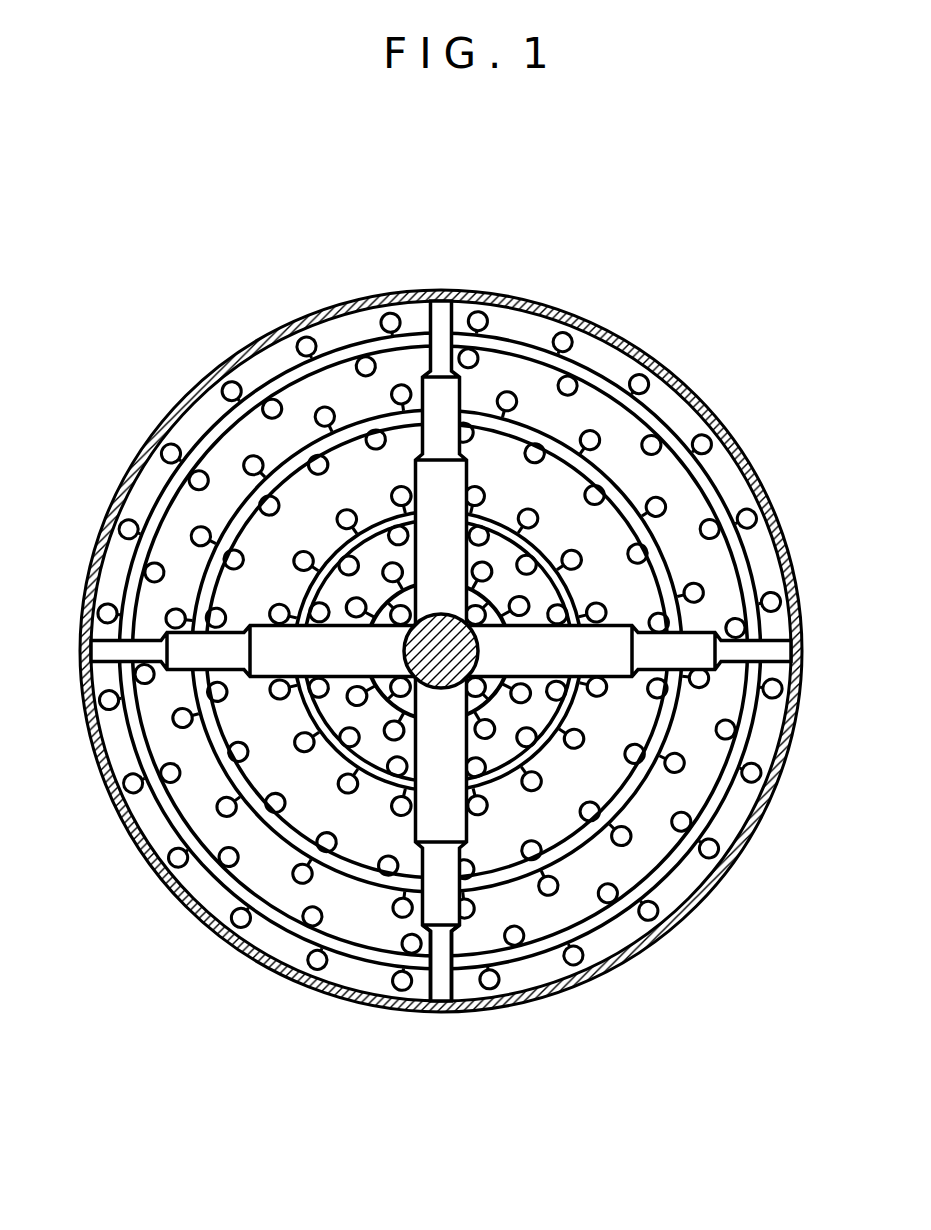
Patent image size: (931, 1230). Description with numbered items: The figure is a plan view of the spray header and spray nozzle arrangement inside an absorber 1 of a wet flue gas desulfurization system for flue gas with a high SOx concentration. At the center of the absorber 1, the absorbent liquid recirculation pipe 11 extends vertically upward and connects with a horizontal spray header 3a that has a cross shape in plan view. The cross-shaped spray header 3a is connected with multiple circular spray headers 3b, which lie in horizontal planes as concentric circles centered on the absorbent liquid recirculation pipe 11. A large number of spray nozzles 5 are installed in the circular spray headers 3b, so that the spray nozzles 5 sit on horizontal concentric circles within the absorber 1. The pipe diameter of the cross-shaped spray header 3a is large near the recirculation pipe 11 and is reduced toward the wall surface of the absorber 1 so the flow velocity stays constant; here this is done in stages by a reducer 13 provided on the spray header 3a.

The absorber 1 is at (550, 300).
The spray header 3a is at (443, 400).
The spray header 3b is at (285, 463).
The spray nozzle 5 is at (680, 375).
The absorbent liquid recirculation pipe 11 is at (450, 687).
The reducer 13 is at (457, 932).